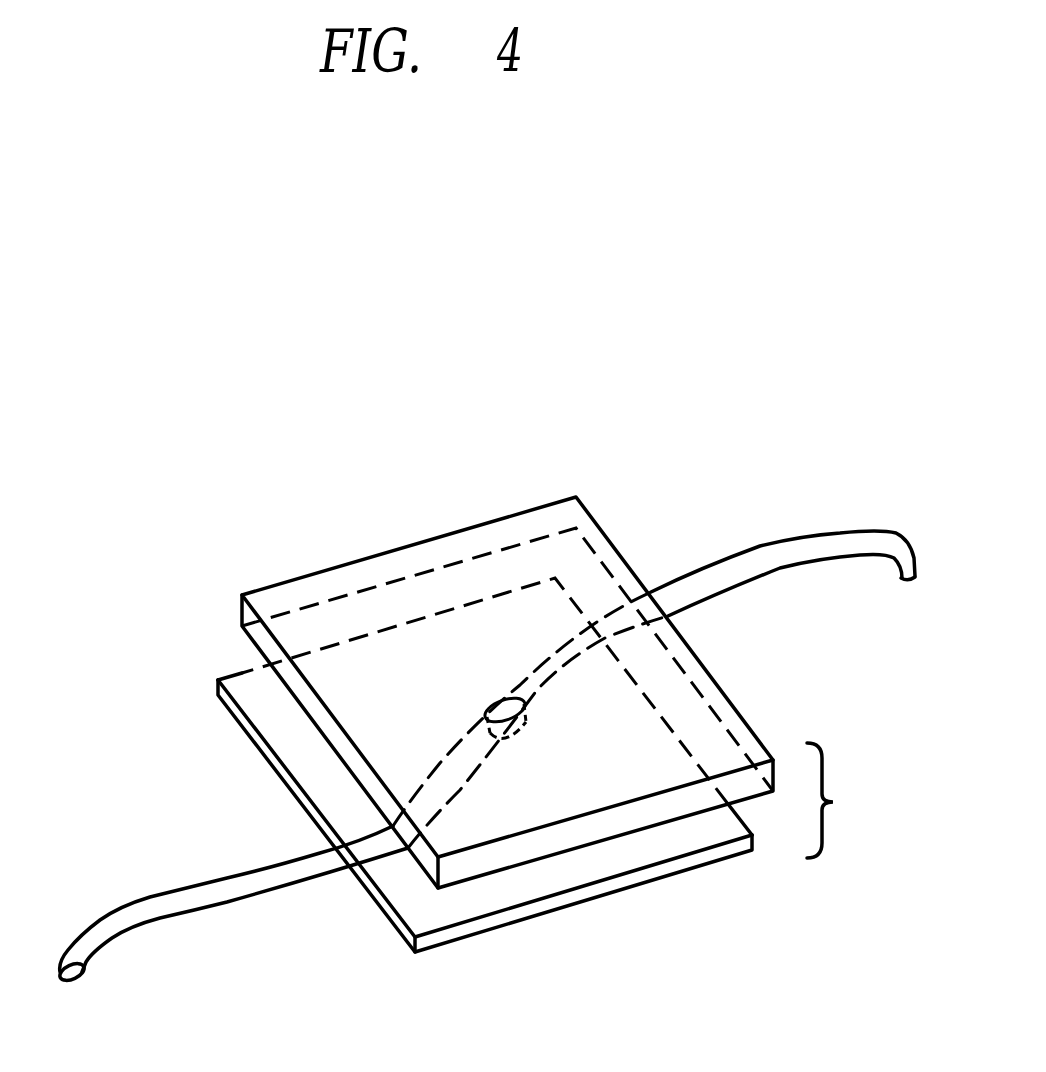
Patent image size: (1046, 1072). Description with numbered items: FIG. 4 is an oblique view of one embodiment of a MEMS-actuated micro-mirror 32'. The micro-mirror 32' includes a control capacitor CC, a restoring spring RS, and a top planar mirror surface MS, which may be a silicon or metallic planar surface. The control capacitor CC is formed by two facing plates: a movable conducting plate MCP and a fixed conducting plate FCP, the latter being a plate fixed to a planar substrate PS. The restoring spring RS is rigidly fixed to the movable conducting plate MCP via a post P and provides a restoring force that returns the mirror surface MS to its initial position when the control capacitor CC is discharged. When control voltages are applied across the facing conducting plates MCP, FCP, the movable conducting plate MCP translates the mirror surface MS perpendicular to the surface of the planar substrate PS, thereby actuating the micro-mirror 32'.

The MEMS-actuated micro-mirror 32' is at (486, 636).
The movable conducting plate MCP is at (265, 593).
The fixed conducting plate FCP is at (237, 676).
The restoring spring RS is at (853, 550).
The post P is at (508, 700).
The mirror surface MS is at (619, 772).
The planar substrate PS is at (708, 1012).
The control capacitor CC is at (852, 800).